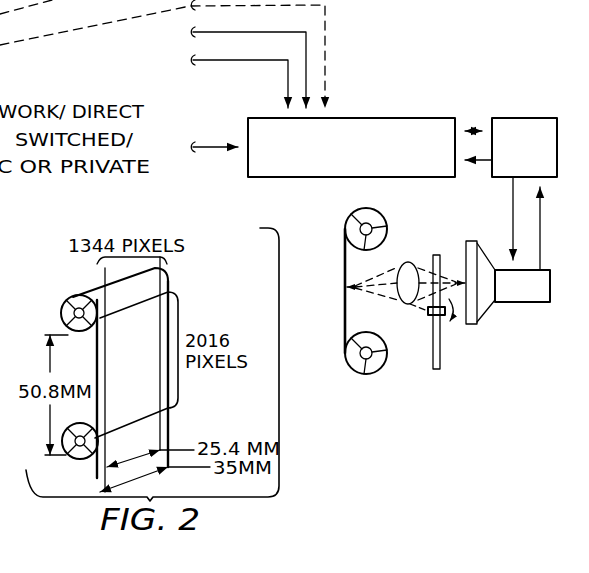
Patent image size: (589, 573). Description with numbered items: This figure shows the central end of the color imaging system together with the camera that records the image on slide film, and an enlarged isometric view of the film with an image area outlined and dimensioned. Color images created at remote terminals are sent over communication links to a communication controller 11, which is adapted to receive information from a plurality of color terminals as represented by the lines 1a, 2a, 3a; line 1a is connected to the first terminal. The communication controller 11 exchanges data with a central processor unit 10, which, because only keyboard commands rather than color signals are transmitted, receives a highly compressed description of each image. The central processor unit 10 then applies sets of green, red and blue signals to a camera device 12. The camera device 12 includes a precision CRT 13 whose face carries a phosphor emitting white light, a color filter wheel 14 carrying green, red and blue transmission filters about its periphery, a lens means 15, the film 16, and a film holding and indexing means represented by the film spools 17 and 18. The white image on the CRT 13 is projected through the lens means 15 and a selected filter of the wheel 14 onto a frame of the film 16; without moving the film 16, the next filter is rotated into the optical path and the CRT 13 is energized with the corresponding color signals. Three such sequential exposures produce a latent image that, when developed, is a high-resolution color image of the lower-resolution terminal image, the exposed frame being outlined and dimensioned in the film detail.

The line 1a is at (214, 140).
The line 2a is at (239, 73).
The line 3a is at (248, 59).
The central processor unit (CPU) 10 is at (552, 117).
The communication controller 11 is at (376, 117).
The camera device 12 is at (460, 373).
The precision CRT 13 is at (484, 262).
The color filter wheel 14 is at (440, 262).
The lens means 15 is at (411, 262).
The film 16 is at (345, 311).
The film spool 17 is at (345, 232).
The film spool 18 is at (376, 375).